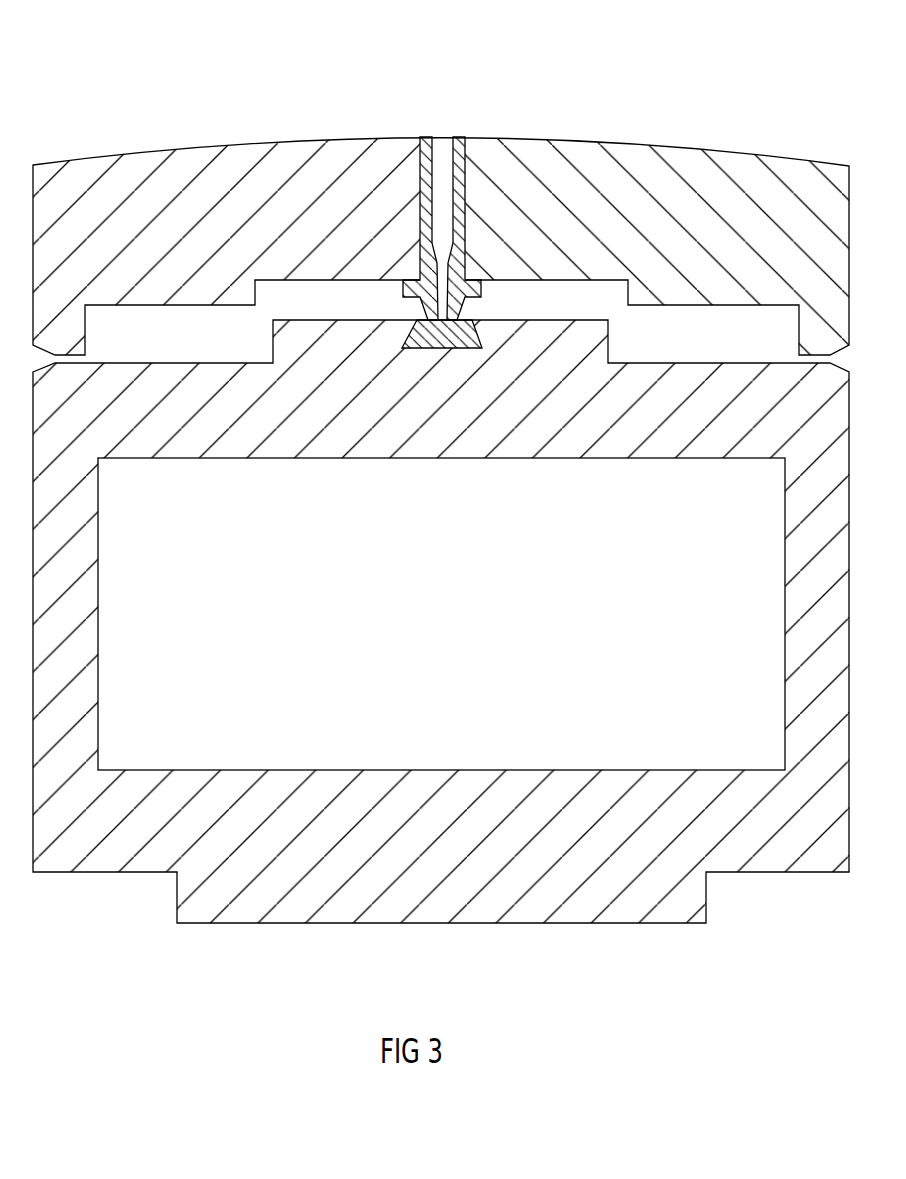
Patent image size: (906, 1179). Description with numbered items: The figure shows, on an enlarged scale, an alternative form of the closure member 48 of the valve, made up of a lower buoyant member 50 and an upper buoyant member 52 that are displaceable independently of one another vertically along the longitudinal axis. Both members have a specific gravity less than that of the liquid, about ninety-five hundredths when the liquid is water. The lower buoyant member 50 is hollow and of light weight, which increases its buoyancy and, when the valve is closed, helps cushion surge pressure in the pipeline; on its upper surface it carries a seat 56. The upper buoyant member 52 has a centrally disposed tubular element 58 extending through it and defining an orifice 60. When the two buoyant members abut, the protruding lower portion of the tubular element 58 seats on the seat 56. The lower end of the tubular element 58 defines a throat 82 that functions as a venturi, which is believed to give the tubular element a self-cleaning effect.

The closure member 48 is at (727, 68).
The lower buoyant member 50 is at (788, 842).
The upper buoyant member 52 is at (693, 168).
The seat 56 is at (465, 323).
The tubular element 58 is at (458, 173).
The orifice 60 is at (430, 222).
The throat 82 is at (438, 297).